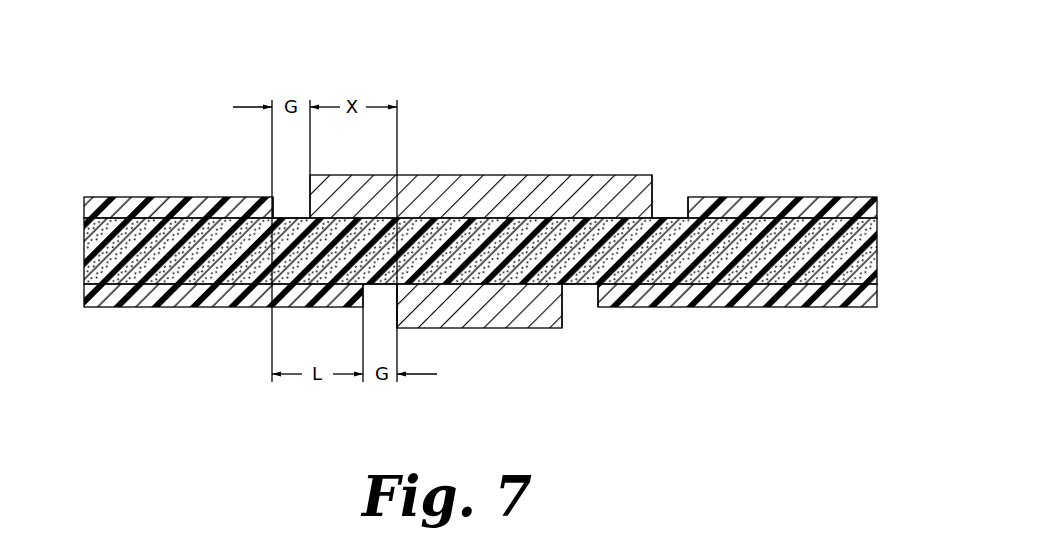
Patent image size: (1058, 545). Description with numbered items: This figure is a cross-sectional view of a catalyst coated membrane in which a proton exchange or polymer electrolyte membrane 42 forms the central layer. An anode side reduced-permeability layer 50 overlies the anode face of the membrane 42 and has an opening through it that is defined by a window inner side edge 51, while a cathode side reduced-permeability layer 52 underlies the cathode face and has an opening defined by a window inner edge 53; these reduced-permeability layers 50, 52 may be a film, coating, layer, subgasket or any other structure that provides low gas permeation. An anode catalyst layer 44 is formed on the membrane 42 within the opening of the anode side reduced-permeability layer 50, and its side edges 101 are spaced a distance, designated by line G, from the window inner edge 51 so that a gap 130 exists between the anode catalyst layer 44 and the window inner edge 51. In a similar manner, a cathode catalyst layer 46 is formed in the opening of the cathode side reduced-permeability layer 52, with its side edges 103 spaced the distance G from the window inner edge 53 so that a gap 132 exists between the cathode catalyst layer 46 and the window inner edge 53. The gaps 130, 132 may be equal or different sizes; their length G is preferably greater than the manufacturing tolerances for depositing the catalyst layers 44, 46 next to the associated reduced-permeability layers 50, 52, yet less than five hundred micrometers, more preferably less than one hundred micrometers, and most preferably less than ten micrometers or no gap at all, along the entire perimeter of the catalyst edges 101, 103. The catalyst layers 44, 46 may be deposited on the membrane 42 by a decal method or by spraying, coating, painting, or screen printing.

The polymer electrolyte membrane 42 is at (877, 260).
The anode catalyst layer 44 is at (460, 175).
The cathode catalyst layer 46 is at (498, 328).
The anode side reduced-permeability layer 50 is at (125, 203).
The window inner side edge 51 is at (272, 197).
The cathode side reduced-permeability layer 52 is at (193, 300).
The window inner edge 53 is at (363, 308).
The side edges of anode catalyst layer 101 is at (311, 178).
The side edges of cathode catalyst layer 103 is at (397, 322).
The gap 130 is at (285, 198).
The gap 132 is at (385, 314).